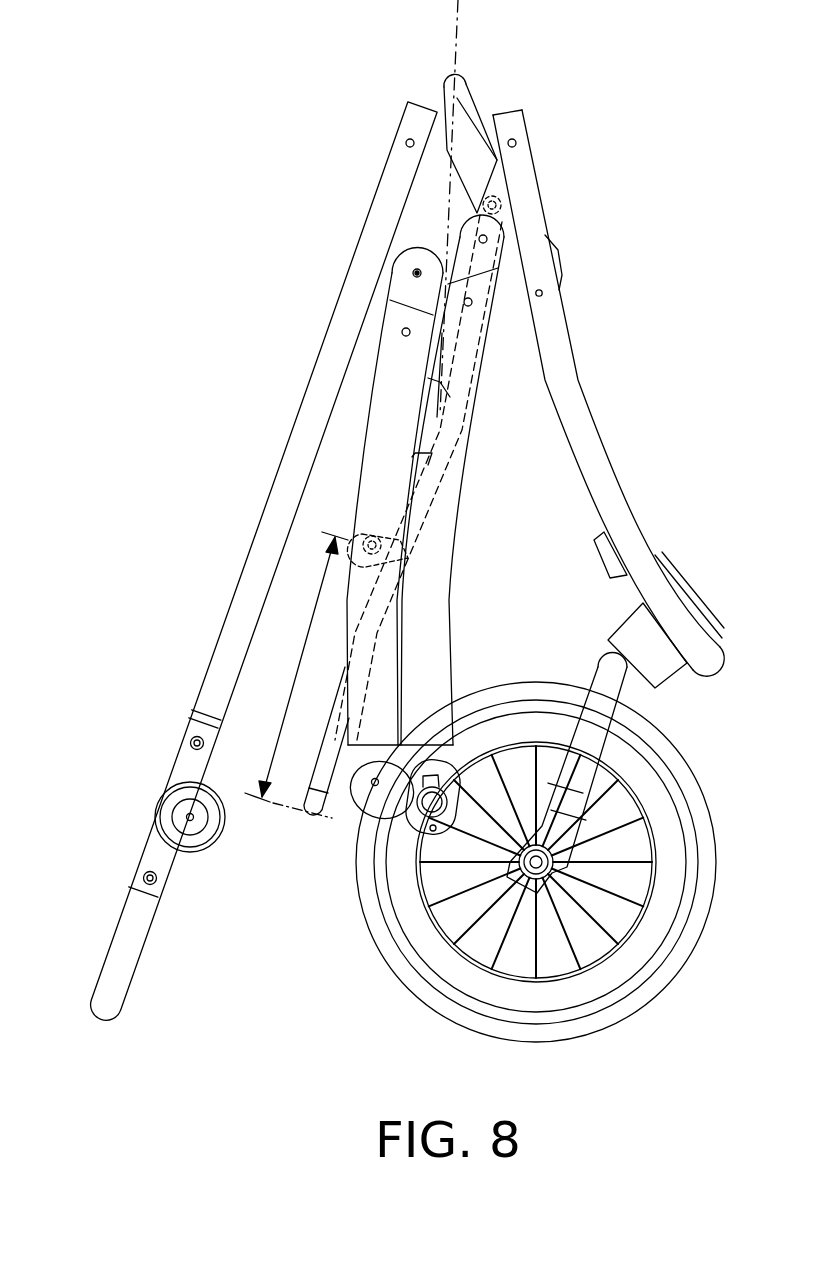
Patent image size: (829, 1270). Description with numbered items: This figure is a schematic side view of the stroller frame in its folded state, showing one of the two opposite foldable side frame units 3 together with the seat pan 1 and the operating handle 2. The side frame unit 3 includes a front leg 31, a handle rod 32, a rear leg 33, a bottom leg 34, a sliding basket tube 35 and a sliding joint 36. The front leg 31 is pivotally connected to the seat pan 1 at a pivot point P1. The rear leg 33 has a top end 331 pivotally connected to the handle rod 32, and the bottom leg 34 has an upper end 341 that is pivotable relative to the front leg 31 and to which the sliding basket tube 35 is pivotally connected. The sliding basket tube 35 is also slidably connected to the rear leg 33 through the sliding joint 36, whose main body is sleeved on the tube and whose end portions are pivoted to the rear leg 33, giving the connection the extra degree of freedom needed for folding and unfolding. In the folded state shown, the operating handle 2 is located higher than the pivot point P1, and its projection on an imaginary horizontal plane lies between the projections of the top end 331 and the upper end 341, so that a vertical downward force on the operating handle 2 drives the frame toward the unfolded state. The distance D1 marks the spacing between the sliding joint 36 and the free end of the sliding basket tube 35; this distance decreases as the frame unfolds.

The seat pan 1 is at (556, 256).
The operating handle 2 is at (439, 74).
The side frame unit 3 is at (193, 540).
The front leg 31 is at (580, 437).
The handle rod 32 is at (290, 483).
The rear leg 33 is at (378, 430).
The top end of rear leg 331 is at (417, 273).
The bottom leg 34 is at (420, 630).
The upper end of bottom leg 341 is at (498, 240).
The sliding basket tube 35 is at (420, 476).
The sliding joint 36 is at (390, 553).
The pivot point P1 is at (543, 292).
The distance D1 is at (296, 675).